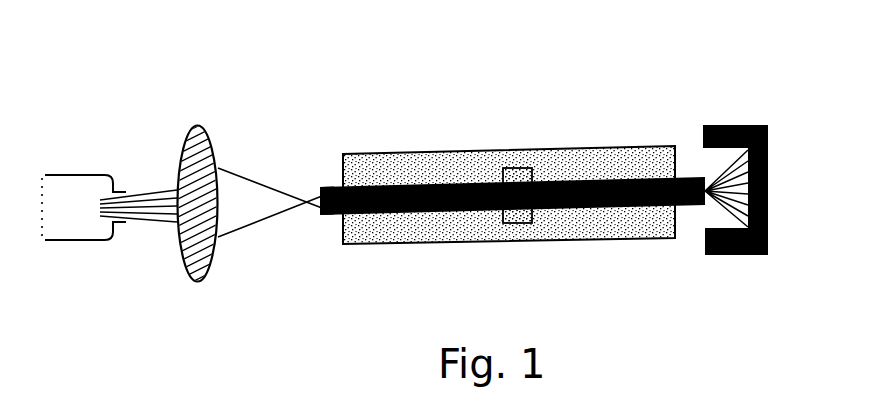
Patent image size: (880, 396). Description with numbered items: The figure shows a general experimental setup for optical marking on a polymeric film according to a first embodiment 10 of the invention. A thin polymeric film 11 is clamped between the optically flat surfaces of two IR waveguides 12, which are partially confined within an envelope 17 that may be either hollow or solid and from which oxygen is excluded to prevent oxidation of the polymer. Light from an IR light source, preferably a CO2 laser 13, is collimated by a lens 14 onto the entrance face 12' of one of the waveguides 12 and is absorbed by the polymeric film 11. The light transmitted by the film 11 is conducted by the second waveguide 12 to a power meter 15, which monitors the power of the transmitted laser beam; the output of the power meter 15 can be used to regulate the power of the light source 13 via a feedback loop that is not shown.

The first embodiment 10 is at (746, 176).
The thin polymeric film 11 is at (526, 168).
The IR waveguides 12 is at (512, 244).
The entrance face 12' is at (299, 260).
The CO2 laser 13 is at (70, 197).
The lens 14 is at (196, 125).
The power meter 15 is at (732, 256).
The envelope 17 is at (443, 153).